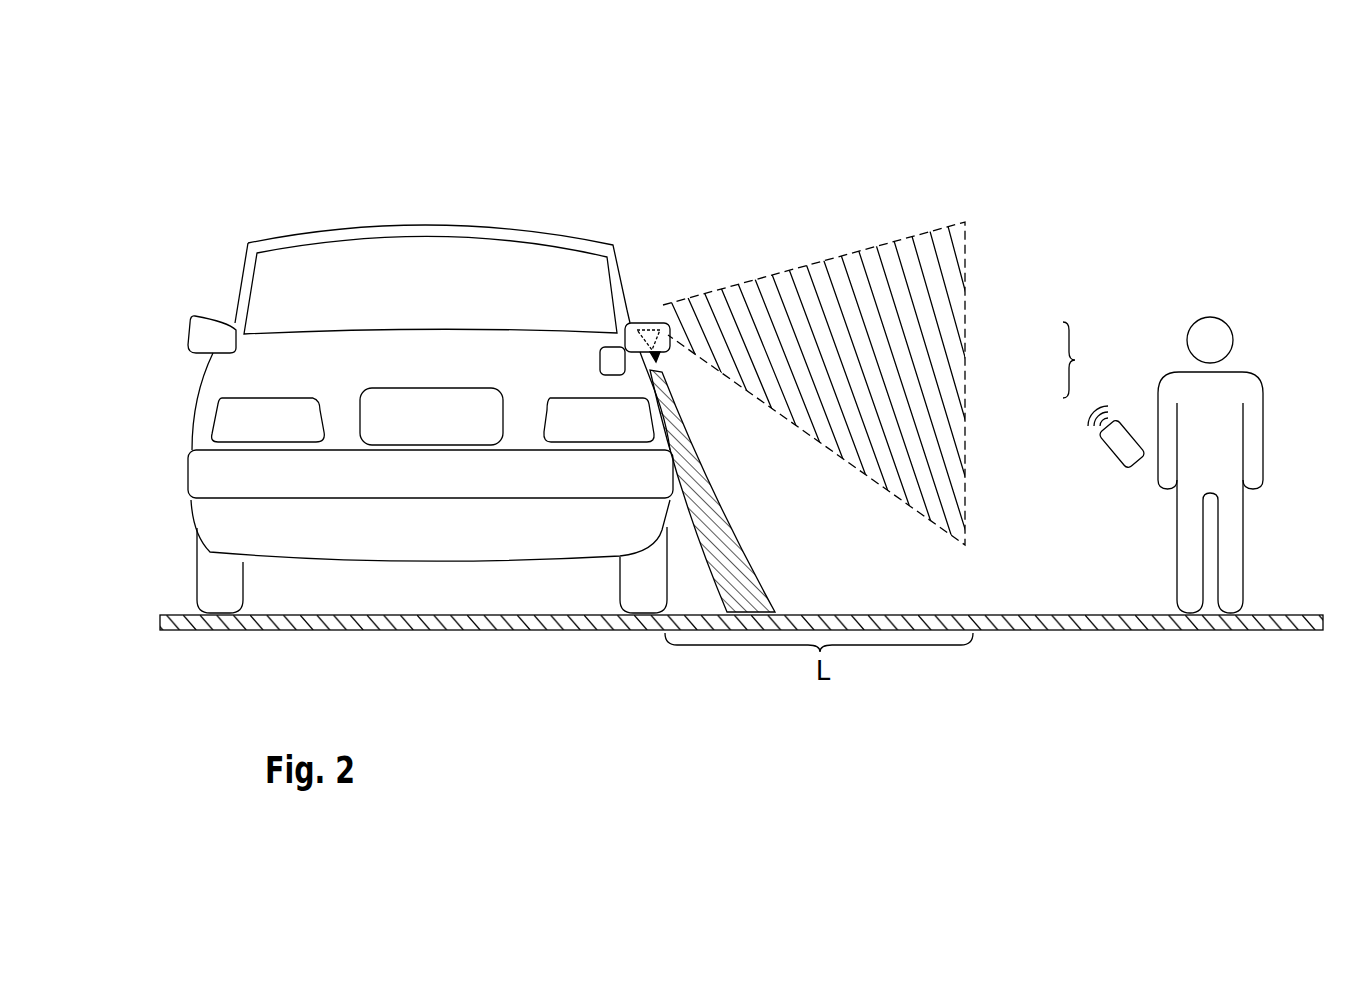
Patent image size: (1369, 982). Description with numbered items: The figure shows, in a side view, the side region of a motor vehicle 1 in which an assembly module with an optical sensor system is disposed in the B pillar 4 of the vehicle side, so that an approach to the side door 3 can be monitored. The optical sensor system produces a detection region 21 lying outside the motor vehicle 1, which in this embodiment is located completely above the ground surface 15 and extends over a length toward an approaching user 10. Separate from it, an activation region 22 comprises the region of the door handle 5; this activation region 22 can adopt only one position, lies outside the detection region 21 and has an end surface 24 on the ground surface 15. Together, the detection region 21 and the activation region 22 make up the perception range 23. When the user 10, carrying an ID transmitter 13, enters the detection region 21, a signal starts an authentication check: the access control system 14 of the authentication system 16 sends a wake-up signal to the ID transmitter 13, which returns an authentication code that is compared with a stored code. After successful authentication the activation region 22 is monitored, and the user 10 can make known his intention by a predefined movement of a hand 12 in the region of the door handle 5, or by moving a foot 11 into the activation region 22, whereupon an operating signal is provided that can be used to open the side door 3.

The motor vehicle 1 is at (376, 180).
The side door 3 is at (639, 228).
The B pillar 4 is at (628, 320).
The door handle 5 is at (662, 369).
The user 10 is at (1236, 407).
The foot 11 is at (1232, 570).
The hand 12 is at (1250, 421).
The ID transmitter 13 is at (1126, 448).
The access control system 14 is at (611, 357).
The ground surface 15 is at (975, 632).
The authentication system 16 is at (842, 336).
The detection region 21 is at (935, 357).
The activation region 22 is at (855, 488).
The perception range 23 is at (1090, 360).
The end surface 24 is at (757, 604).